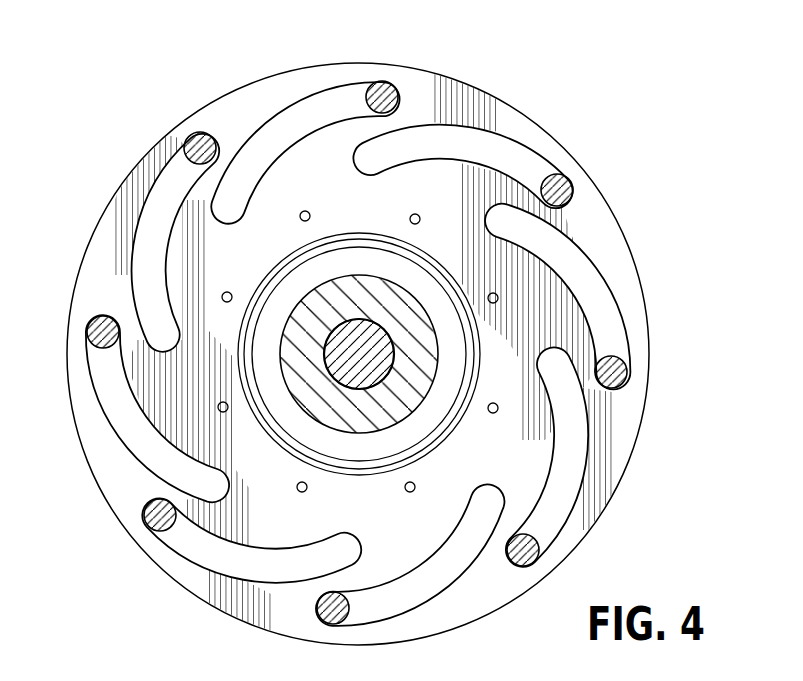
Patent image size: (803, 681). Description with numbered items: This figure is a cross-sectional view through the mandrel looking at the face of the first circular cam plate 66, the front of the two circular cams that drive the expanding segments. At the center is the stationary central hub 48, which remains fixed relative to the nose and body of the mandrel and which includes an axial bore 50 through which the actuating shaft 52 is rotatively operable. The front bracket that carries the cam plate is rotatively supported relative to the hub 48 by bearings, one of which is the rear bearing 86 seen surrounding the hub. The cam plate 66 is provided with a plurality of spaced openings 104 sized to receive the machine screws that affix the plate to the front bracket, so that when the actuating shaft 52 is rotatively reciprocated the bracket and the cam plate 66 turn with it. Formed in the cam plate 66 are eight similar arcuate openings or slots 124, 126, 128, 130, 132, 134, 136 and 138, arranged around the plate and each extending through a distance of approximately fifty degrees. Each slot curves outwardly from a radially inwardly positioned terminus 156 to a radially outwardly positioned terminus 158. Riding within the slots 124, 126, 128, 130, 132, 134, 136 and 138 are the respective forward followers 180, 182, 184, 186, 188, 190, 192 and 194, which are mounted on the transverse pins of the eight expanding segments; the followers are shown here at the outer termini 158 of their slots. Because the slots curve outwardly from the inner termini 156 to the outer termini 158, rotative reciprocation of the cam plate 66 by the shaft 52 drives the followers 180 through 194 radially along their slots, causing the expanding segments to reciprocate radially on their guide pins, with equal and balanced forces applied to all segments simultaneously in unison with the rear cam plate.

The central hub 48 is at (424, 330).
The axial bore 50 is at (375, 380).
The actuating shaft 52 is at (340, 363).
The first circular cam plate 66 is at (536, 599).
The rear bearing 86 is at (287, 293).
The spaced openings 104 is at (410, 218).
The arcuate slot 124 is at (293, 117).
The arcuate slot 126 is at (512, 147).
The arcuate slot 128 is at (598, 296).
The arcuate slot 130 is at (567, 467).
The arcuate slot 132 is at (430, 575).
The arcuate slot 134 is at (210, 552).
The arcuate slot 136 is at (125, 413).
The arcuate slot 138 is at (155, 220).
The radially inwardly positioned termini 156 is at (233, 212).
The radially outwardly positioned termini 158 is at (206, 140).
The forward follower 180 is at (569, 178).
The forward follower 182 is at (385, 82).
The forward follower 184 is at (190, 144).
The forward follower 186 is at (88, 325).
The forward follower 188 is at (150, 527).
The forward follower 190 is at (333, 622).
The forward follower 192 is at (540, 556).
The forward follower 194 is at (628, 367).